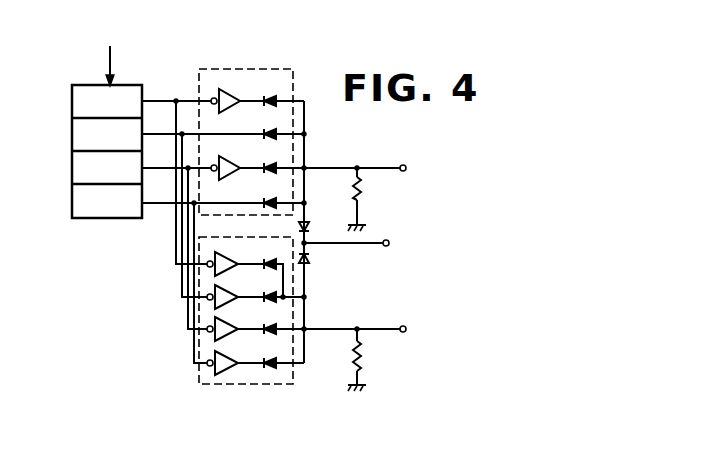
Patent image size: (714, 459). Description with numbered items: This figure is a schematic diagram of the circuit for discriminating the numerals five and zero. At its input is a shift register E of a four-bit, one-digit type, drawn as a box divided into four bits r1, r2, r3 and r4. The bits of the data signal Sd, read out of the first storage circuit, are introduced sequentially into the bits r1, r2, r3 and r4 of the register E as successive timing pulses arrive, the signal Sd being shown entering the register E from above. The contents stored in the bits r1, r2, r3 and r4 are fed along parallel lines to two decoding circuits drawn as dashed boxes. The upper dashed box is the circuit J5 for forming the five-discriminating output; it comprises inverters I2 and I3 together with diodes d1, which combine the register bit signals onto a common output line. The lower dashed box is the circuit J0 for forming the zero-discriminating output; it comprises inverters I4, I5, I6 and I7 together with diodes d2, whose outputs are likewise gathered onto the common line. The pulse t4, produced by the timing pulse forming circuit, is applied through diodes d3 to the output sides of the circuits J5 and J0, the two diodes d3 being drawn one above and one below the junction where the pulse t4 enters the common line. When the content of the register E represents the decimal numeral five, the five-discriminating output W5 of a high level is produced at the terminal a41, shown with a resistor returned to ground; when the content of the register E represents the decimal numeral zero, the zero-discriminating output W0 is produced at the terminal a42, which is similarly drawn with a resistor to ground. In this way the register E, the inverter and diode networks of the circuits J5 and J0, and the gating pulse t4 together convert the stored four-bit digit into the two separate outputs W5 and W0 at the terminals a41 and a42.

The data signal Sd is at (112, 48).
The shift register E is at (72, 110).
The bit r4 is at (107, 102).
The bit r3 is at (107, 135).
The bit r2 is at (107, 168).
The bit r1 is at (107, 201).
The circuit for forming the "5" discriminating output J5 is at (262, 68).
The circuit for forming the "0" discriminating output J0 is at (253, 385).
The inverter I2 is at (229, 81).
The inverter I3 is at (233, 150).
The inverter I4 is at (233, 246).
The inverter I5 is at (233, 279).
The inverter I6 is at (233, 311).
The inverter I7 is at (233, 345).
The diodes d1 is at (266, 128).
The diodes d2 is at (282, 326).
The diodes d3 is at (308, 228).
The "5" discriminating output W5 is at (372, 169).
The "0" discriminating output W0 is at (373, 329).
The terminal a41 is at (403, 165).
The terminal a42 is at (403, 332).
The pulse t4 is at (352, 244).